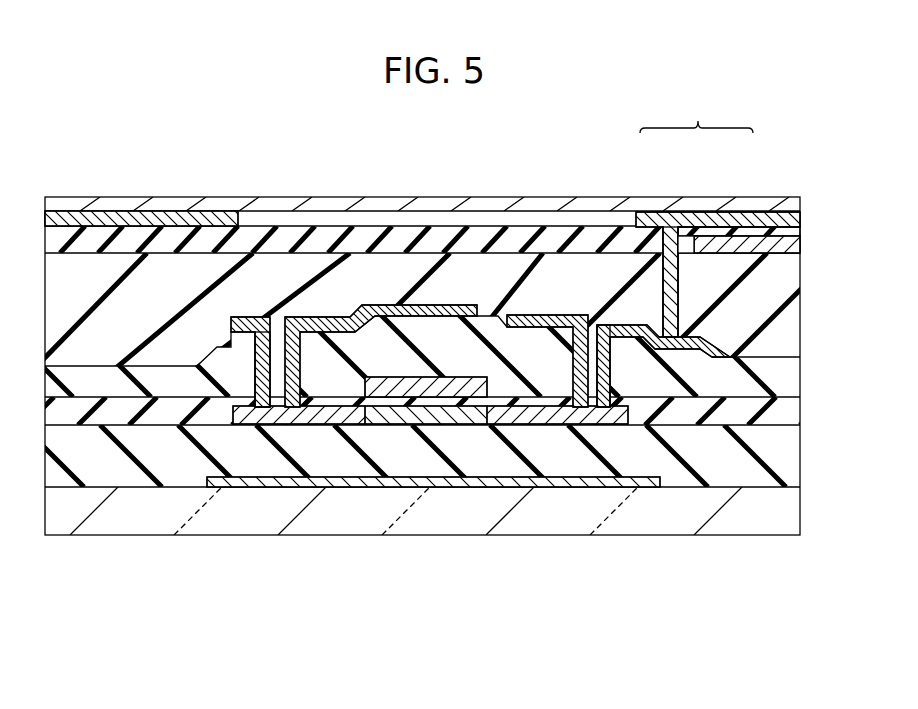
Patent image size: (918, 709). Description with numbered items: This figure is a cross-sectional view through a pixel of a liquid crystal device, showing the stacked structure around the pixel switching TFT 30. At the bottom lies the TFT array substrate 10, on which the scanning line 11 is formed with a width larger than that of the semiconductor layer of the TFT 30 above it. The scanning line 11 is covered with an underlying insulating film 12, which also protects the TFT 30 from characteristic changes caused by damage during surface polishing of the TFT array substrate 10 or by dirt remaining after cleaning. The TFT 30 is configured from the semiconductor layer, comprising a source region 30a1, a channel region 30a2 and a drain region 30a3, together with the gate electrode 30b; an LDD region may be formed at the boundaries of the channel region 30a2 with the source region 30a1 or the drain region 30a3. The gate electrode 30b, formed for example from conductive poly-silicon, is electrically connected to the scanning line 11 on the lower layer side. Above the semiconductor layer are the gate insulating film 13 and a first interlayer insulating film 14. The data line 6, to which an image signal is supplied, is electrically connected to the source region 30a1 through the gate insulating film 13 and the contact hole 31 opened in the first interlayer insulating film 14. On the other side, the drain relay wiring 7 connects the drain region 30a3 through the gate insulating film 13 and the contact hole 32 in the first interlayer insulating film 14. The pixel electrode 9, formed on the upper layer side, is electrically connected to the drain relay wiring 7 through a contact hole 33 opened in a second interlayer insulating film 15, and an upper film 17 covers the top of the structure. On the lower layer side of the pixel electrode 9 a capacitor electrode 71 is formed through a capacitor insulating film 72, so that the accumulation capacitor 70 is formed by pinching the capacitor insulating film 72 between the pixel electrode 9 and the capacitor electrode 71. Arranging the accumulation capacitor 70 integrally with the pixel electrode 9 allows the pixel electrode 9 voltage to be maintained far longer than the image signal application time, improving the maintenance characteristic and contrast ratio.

The data line 6 is at (259, 317).
The drain relay wiring 7 is at (565, 317).
The pixel electrode 9 is at (76, 218).
The TFT array substrate 10 is at (793, 502).
The scanning line 11 is at (633, 487).
The underlying insulating film 12 is at (793, 443).
The gate insulating film 13 is at (793, 407).
The first interlayer insulating film 14 is at (793, 375).
The second interlayer insulating film 15 is at (793, 308).
The upper insulating film 17 is at (386, 205).
The TFT 30 is at (430, 502).
The source region 30a1 is at (288, 424).
The channel region 30a2 is at (422, 424).
The drain region 30a3 is at (532, 424).
The gate electrode 30b is at (406, 378).
The contact hole 31 is at (262, 330).
The contact hole 32 is at (601, 350).
The contact hole 33 is at (665, 283).
The accumulation capacitor 70 is at (720, 173).
The capacitor electrode 71 is at (733, 243).
The capacitor insulating film 72 is at (698, 227).